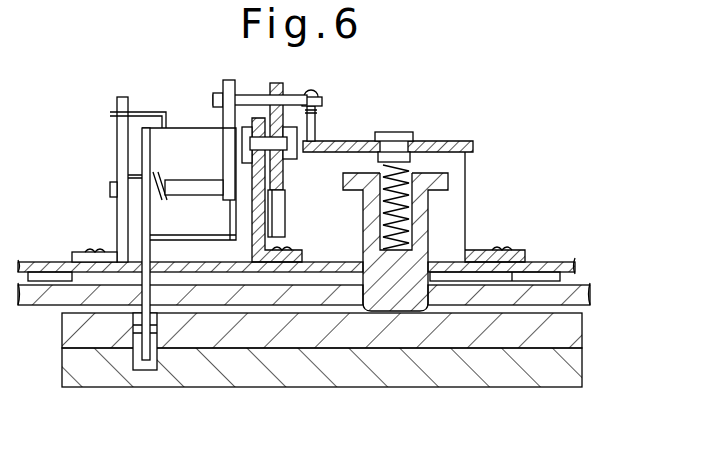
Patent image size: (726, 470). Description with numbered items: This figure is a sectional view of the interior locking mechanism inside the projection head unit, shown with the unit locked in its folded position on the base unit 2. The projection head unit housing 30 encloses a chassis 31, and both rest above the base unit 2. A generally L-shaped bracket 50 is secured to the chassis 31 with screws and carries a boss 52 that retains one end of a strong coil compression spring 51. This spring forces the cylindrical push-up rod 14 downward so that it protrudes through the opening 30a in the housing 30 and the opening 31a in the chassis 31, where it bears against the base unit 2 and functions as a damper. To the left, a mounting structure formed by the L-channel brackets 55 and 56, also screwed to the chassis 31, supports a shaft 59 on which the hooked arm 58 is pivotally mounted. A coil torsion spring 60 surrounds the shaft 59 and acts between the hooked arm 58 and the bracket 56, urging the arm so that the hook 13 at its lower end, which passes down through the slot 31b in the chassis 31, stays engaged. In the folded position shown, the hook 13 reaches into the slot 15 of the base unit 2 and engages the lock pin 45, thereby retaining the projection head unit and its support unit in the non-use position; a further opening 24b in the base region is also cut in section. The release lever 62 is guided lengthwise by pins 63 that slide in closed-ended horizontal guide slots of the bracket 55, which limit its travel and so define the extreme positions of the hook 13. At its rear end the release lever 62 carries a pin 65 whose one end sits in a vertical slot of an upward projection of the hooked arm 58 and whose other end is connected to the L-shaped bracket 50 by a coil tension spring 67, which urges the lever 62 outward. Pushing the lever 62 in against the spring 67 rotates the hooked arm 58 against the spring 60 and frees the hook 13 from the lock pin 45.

The base unit 2 is at (531, 383).
The hook 13 is at (145, 318).
The push-up rod 14 is at (472, 188).
The slot 15 is at (133, 314).
The hole 24b is at (143, 280).
The projection head unit housing 30 is at (586, 294).
The opening 30a is at (411, 300).
The chassis 31 is at (563, 260).
The opening 31a is at (430, 262).
The slot 31b is at (144, 262).
The lock pin 45 is at (162, 328).
The L-shaped bracket 50 is at (472, 140).
The coil compression spring 51 is at (417, 170).
The boss 52 is at (403, 131).
The L-channel bracket 55 is at (250, 240).
The L-channel bracket 56 is at (116, 165).
The hooked arm 58 is at (188, 124).
The shaft 59 is at (188, 188).
The coil torsion spring 60 is at (146, 112).
The release lever 62 is at (283, 185).
The pins 63 is at (281, 140).
The pin 65 is at (289, 100).
The coil tension spring 67 is at (315, 93).